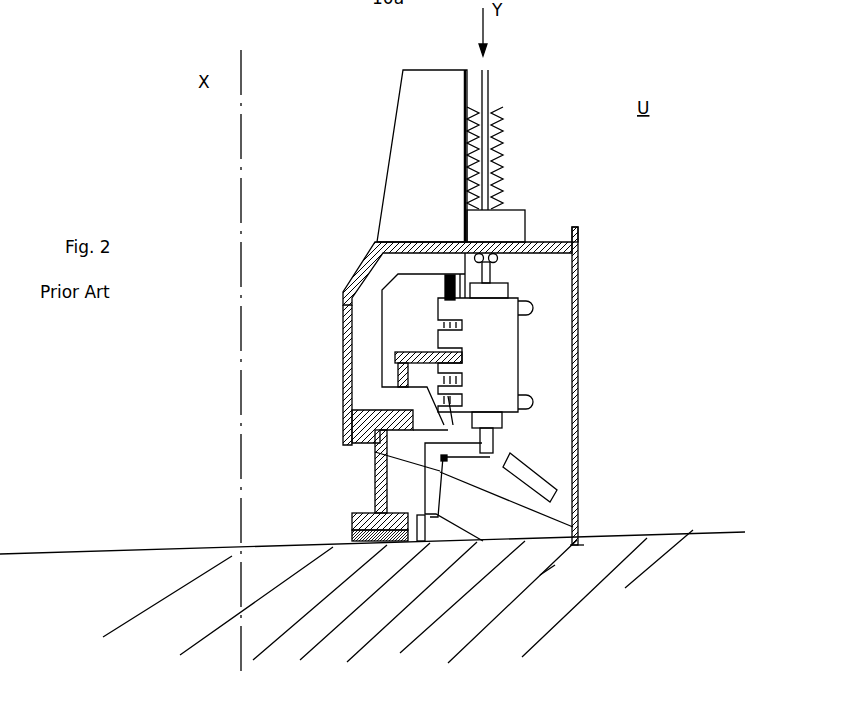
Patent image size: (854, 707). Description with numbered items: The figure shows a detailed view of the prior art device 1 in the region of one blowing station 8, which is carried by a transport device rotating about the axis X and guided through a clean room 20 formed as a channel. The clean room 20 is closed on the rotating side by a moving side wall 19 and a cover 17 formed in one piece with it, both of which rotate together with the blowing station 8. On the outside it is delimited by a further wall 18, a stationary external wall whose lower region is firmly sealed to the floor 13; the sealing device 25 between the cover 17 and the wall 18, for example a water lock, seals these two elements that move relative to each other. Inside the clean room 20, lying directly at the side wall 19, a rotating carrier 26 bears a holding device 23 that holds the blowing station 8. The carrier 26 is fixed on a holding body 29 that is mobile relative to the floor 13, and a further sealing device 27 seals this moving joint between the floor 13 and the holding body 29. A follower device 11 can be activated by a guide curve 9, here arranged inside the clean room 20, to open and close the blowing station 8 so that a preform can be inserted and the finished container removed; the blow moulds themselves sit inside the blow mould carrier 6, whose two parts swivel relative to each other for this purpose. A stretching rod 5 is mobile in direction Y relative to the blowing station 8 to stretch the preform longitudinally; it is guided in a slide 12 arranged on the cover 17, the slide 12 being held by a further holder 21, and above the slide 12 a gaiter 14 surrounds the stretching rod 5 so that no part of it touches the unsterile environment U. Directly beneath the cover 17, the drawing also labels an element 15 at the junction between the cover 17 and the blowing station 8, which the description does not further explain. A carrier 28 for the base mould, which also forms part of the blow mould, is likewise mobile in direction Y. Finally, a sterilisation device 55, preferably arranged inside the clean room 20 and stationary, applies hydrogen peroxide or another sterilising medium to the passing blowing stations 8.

The device 1 is at (348, 140).
The stretching rod 5 is at (482, 158).
The blow mould carrier 6 is at (508, 377).
The blowing station 8 is at (507, 335).
The guide curve 9 is at (553, 566).
The follower device 11 is at (578, 524).
The slide 12 is at (509, 213).
The floor 13 is at (570, 615).
The gaiter 14 is at (497, 193).
The joint 15 is at (498, 256).
The cover 17 is at (432, 242).
The wall 18 is at (578, 305).
The side wall 19 is at (343, 343).
The clean room 20 is at (543, 465).
The holder 21 is at (450, 118).
The holding device 23 is at (420, 352).
The sealing device 25 is at (578, 228).
The carrier 26 is at (374, 408).
The further sealing device 27 is at (350, 532).
The carrier for base mould 28 is at (492, 443).
The holding body 29 is at (378, 488).
The sterilisation device 55 is at (375, 452).